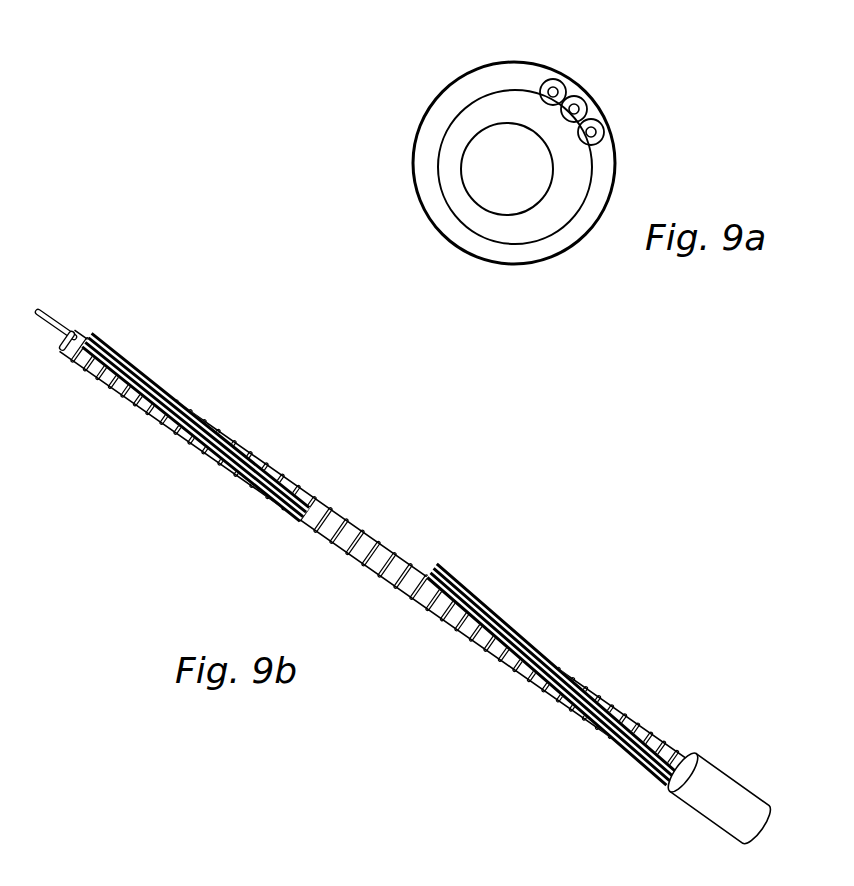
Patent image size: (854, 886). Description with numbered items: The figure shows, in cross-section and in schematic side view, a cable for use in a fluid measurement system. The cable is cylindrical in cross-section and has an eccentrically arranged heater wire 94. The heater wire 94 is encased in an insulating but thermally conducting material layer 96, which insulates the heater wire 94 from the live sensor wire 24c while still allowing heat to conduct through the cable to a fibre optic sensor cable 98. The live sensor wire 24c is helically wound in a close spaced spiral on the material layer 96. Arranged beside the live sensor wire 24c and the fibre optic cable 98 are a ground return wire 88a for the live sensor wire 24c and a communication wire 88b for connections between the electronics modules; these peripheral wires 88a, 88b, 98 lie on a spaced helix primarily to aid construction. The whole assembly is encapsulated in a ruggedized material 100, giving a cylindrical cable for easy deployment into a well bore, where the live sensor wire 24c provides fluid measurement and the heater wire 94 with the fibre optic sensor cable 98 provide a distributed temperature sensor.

In FIG. 9A, the ruggedized material 100 is at (496, 78).
In FIG. 9B, the ruggedized material 100 is at (735, 790).
In FIG. 9A, the fibre optic sensor cable 98 is at (572, 87).
In FIG. 9B, the fibre optic sensor cable 98 is at (110, 378).
In FIG. 9A, the ground return wire 88a is at (589, 103).
In FIG. 9B, the ground return wire 88a is at (236, 473).
In FIG. 9A, the communication wire 88b is at (613, 128).
In FIG. 9B, the communication wire 88b is at (146, 368).
In FIG. 9A, the insulating but thermally conducting material layer 96 is at (447, 155).
In FIG. 9B, the insulating but thermally conducting material layer 96 is at (462, 613).
In FIG. 9A, the heater wire 94 is at (518, 168).
In FIG. 9B, the heater wire 94 is at (51, 316).
In FIG. 9A, the live sensor wire 24c is at (510, 243).
In FIG. 9B, the live sensor wire 24c is at (370, 560).